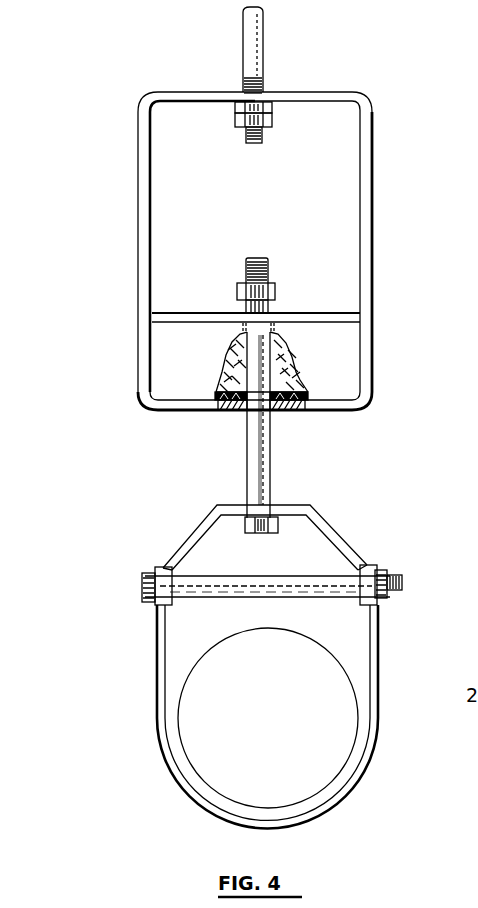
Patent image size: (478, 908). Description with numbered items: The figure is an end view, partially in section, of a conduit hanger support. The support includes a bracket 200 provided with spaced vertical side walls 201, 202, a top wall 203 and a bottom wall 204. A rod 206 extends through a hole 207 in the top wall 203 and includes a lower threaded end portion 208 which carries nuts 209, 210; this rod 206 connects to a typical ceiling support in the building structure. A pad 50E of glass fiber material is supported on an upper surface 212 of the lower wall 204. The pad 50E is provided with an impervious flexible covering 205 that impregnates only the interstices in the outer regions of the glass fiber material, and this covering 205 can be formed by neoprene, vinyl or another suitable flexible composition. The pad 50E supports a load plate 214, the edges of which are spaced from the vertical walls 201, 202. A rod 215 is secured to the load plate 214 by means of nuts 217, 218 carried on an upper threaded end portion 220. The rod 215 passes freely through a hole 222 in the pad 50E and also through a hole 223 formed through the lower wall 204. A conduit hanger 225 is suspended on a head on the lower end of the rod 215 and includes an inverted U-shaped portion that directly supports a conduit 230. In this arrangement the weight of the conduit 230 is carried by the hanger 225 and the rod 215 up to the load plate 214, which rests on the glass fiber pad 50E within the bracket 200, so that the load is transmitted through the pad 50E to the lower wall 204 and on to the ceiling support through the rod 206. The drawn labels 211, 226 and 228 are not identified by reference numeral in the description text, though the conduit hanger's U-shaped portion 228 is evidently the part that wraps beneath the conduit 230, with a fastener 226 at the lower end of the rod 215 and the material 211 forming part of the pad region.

The bracket 200 is at (264, 255).
The vertical side wall 201 is at (139, 201).
The vertical side wall 202 is at (375, 229).
The top wall 203 is at (141, 104).
The bottom wall 204 is at (343, 410).
The impervious flexible covering 205 is at (303, 388).
The rod 206 is at (242, 40).
The hole 207 is at (263, 96).
The lower threaded end portion 208 is at (263, 141).
The nut 209 is at (237, 106).
The nut 210 is at (238, 128).
The resilient isolator body 211 is at (227, 363).
The upper surface 212 is at (214, 398).
The load plate 214 is at (215, 312).
The rod 215 is at (273, 481).
The nut 217 is at (271, 289).
The nut 218 is at (275, 308).
The upper threaded end portion 220 is at (248, 263).
The hole 222 is at (283, 346).
The hole 223 is at (225, 412).
The conduit hanger 225 is at (182, 533).
The bracket nut 226 is at (259, 533).
The pipe hanger strap 228 is at (373, 650).
The conduit 230 is at (362, 708).
The pad 50E is at (358, 348).